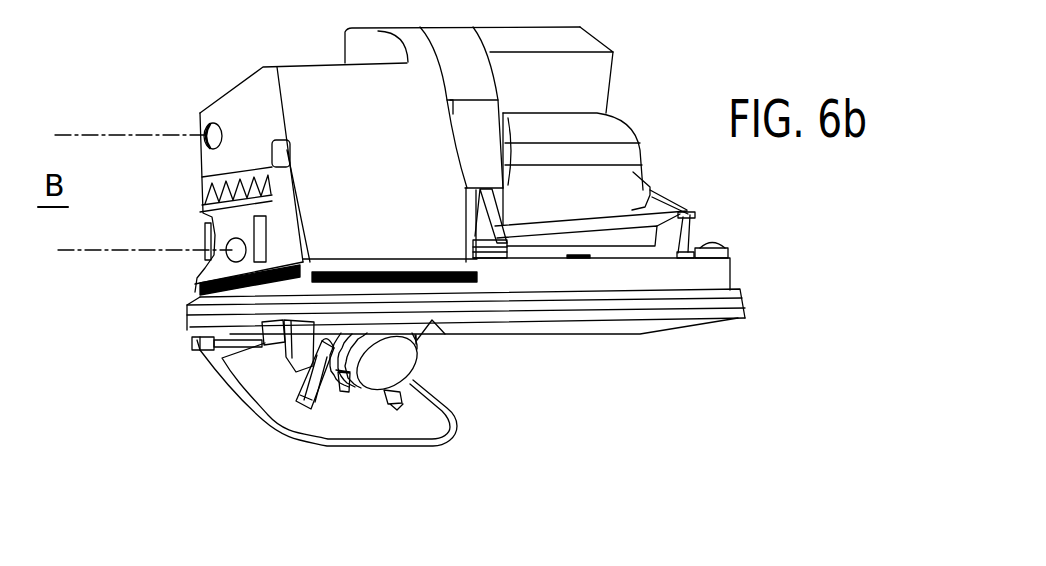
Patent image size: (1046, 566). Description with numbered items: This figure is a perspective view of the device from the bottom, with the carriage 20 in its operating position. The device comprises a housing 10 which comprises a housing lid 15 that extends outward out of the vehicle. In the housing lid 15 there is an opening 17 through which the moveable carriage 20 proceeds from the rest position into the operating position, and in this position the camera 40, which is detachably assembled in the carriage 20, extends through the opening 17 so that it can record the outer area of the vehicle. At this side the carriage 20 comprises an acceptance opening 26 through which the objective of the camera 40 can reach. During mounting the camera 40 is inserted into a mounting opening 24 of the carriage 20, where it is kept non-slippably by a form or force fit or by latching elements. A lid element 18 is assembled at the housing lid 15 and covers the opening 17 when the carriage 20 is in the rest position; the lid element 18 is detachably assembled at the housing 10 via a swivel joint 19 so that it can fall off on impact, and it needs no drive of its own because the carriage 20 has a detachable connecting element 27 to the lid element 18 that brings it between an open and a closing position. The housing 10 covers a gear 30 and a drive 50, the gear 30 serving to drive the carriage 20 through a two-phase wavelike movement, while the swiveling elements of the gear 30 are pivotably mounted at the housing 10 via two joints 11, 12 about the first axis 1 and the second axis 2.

The first axis 1 is at (128, 135).
The second axis 2 is at (93, 253).
The housing 10 is at (313, 80).
The joint 11 is at (205, 127).
The joint 12 is at (230, 253).
The housing lid 15 is at (684, 308).
The opening 17 is at (464, 354).
The lid element 18 is at (377, 425).
The swivel joint 19 is at (193, 343).
The carriage 20 is at (277, 333).
The mounting opening 24 is at (283, 373).
The acceptance opening 26 is at (347, 392).
The detachable connecting element 27 is at (321, 397).
The gear 30 is at (468, 459).
The camera 40 is at (398, 363).
The drive 50 is at (647, 111).